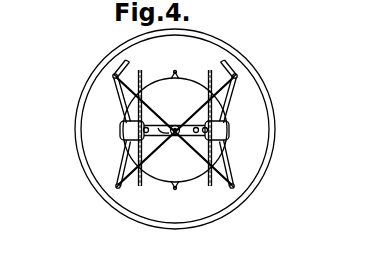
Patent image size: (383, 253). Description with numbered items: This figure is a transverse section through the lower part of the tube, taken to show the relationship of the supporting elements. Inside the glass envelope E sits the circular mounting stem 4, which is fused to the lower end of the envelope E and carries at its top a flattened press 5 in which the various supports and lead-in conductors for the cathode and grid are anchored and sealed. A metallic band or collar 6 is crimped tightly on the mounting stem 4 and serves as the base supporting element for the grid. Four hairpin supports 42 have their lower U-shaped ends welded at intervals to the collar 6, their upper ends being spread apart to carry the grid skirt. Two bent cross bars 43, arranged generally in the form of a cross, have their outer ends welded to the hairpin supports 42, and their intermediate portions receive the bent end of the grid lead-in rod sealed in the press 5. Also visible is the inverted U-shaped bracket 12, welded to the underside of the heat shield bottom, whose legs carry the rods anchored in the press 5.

The glass envelope E is at (108, 204).
The metallic band or collar 6 is at (159, 184).
The bracket 12 is at (134, 116).
The flattened press 5 is at (229, 131).
The circular mounting stem 4 is at (181, 172).
The hairpin supports 42 is at (118, 86).
The bent cross bars 43 is at (229, 68).